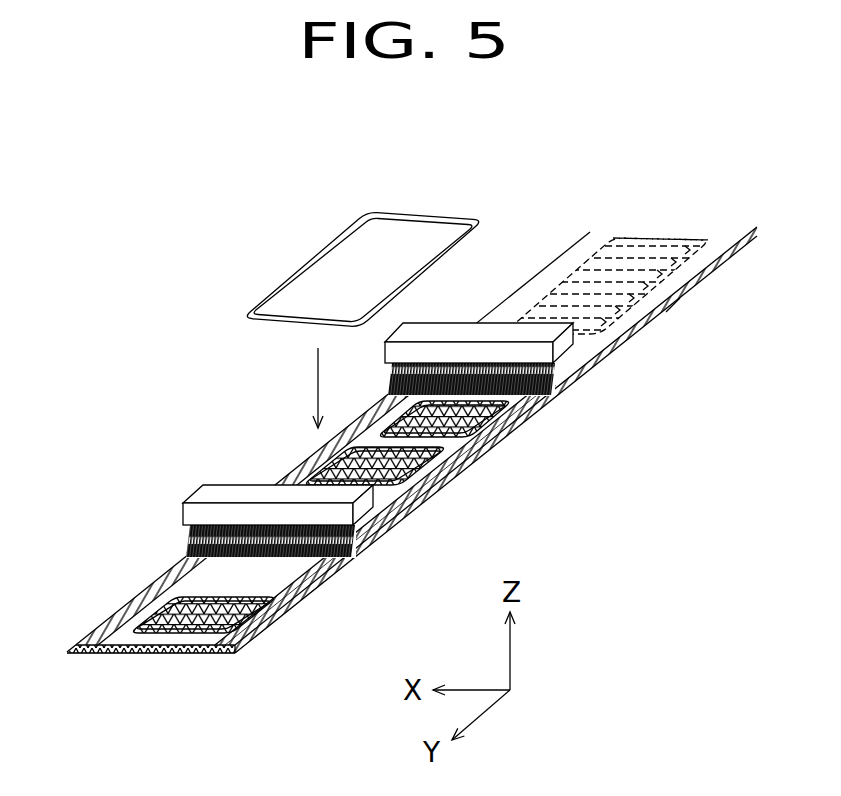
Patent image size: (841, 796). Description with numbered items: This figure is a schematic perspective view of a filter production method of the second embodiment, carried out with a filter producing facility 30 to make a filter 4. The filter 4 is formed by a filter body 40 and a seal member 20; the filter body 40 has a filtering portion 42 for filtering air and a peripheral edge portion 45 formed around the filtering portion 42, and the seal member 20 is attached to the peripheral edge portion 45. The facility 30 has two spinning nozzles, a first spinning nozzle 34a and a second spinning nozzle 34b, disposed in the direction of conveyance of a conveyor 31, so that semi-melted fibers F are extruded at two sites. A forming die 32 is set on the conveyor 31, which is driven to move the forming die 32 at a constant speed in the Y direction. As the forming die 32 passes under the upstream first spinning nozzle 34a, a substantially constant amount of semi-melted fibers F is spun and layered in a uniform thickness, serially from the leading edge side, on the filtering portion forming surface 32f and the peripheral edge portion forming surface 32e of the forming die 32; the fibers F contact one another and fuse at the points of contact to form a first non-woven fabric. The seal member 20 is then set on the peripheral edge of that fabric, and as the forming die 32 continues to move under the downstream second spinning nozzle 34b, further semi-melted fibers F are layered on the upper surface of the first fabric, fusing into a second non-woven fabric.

The filter 4 is at (155, 656).
The seal member 20 is at (280, 275).
The filter producing facility 30 is at (535, 217).
The conveyor 31 is at (616, 338).
The forming die 32 is at (617, 231).
The peripheral edge portion forming surface 32e is at (668, 303).
The filtering portion forming surface 32f is at (650, 240).
The first spinning nozzle 34a is at (432, 333).
The second spinning nozzle 34b is at (215, 497).
The filter body 40 is at (287, 622).
The filtering portion 42 is at (173, 603).
The peripheral edge portion 45 is at (243, 647).
The semi-melted fibers F is at (392, 380).